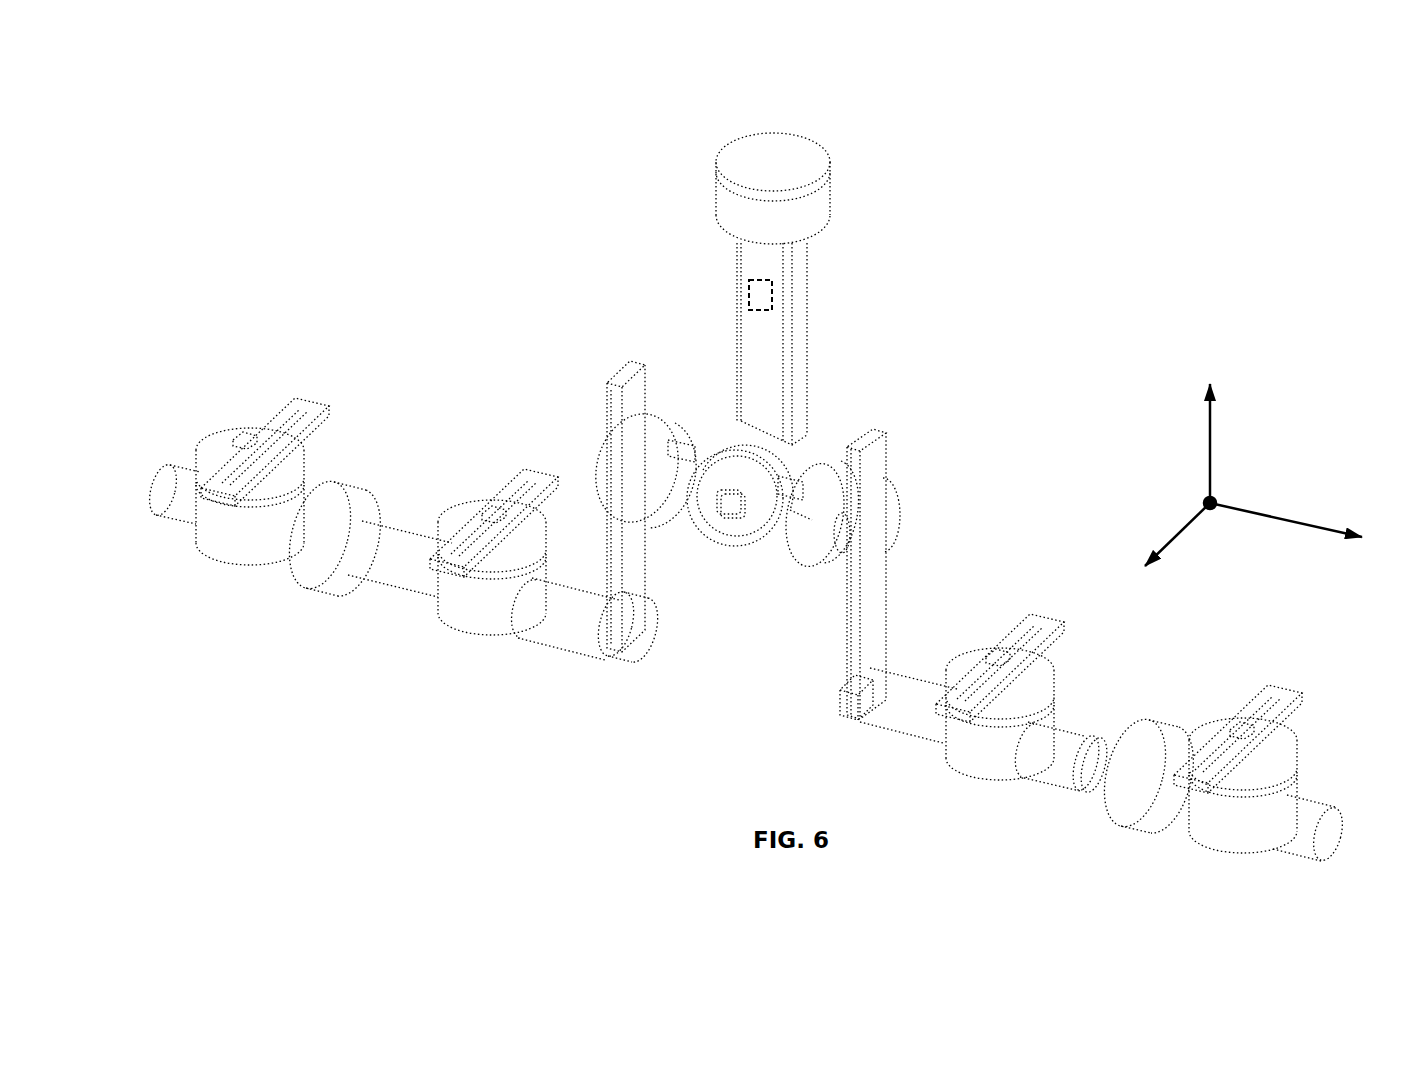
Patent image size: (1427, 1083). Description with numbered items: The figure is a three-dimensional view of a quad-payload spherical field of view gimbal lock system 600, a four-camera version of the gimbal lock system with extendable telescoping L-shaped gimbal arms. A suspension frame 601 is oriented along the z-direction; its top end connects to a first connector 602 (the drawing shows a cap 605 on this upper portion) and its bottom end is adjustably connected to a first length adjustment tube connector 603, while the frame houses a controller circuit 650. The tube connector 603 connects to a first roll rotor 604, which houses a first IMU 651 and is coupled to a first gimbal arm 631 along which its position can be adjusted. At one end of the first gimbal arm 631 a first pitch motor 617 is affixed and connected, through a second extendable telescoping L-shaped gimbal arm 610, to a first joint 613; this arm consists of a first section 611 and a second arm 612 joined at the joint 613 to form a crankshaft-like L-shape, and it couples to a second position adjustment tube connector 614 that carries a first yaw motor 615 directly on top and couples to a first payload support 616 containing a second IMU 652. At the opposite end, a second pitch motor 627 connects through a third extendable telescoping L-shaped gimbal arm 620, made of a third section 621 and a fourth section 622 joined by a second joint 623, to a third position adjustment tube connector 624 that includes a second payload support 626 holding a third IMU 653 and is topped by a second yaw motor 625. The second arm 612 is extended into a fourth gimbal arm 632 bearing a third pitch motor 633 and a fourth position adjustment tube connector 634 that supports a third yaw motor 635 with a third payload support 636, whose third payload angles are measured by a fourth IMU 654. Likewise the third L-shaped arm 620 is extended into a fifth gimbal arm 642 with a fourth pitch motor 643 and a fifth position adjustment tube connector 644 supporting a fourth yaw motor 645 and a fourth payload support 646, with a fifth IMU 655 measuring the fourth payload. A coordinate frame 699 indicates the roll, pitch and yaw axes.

The quad-payload spherical field of view gimbal lock system 600 is at (757, 474).
The suspension frame 601 is at (800, 328).
The first connector 602 is at (817, 218).
The first length adjustment tube connector 603 is at (817, 440).
The first roll rotor 604 is at (734, 543).
The base cap 605 is at (828, 170).
The second extendable telescoping L-shaped gimbal arm 610 is at (950, 665).
The first section 611 is at (875, 602).
The second arm 612 is at (907, 718).
The first joint 613 is at (848, 702).
The second position adjustment tube connector 614 is at (987, 770).
The first yaw motor 615 is at (1035, 698).
The first payload support 616 is at (1042, 623).
The first pitch motor 617 is at (822, 562).
The third extendable telescoping L-shaped gimbal arm 620 is at (477, 541).
The third section 621 is at (633, 533).
The fourth section 622 is at (563, 615).
The second joint 623 is at (613, 648).
The third position adjustment tube connector 624 is at (472, 620).
The second yaw motor 625 is at (447, 513).
The second payload support 626 is at (545, 475).
The second pitch motor 627 is at (652, 423).
The first gimbal arm 631 is at (678, 503).
The fourth gimbal arm 632 is at (1330, 830).
The third pitch motor 633 is at (1147, 728).
The fourth position adjustment tube connector 634 is at (1225, 838).
The third yaw motor 635 is at (1285, 770).
The third payload support 636 is at (1300, 705).
The fifth gimbal arm 642 is at (163, 503).
The fourth pitch motor 643 is at (322, 583).
The fifth position adjustment tube connector 644 is at (220, 547).
The fourth yaw motor 645 is at (288, 483).
The fourth payload support 646 is at (295, 405).
The controller circuit 650 is at (752, 293).
The first IMU 651 is at (733, 511).
The second IMU 652 is at (1000, 657).
The third IMU 653 is at (499, 516).
The fourth IMU 654 is at (1248, 723).
The fifth IMU 655 is at (250, 445).
The coordinate system 699 is at (1245, 354).